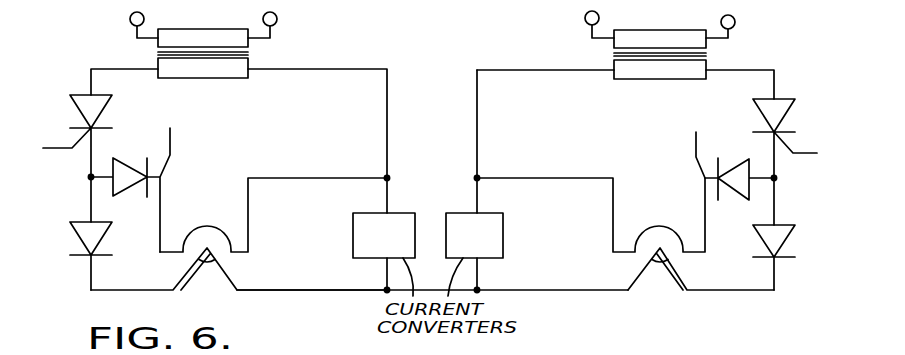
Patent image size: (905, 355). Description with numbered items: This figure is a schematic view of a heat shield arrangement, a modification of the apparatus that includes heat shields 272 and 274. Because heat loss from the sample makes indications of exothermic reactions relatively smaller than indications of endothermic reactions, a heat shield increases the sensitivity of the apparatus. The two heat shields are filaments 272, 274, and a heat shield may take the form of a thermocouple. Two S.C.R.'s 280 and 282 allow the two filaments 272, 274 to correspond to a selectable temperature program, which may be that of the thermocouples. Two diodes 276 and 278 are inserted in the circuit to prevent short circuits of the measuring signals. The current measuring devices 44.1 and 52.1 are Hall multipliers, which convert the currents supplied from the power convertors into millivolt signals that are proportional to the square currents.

The heat shield 272 is at (207, 225).
The heat shield 274 is at (642, 204).
The diode 276 is at (72, 255).
The diode 278 is at (789, 237).
The S.C.R. 280 is at (130, 190).
The S.C.R. 282 is at (735, 166).
The current measuring device 44.1 is at (384, 233).
The current measuring device 52.1 is at (474, 181).